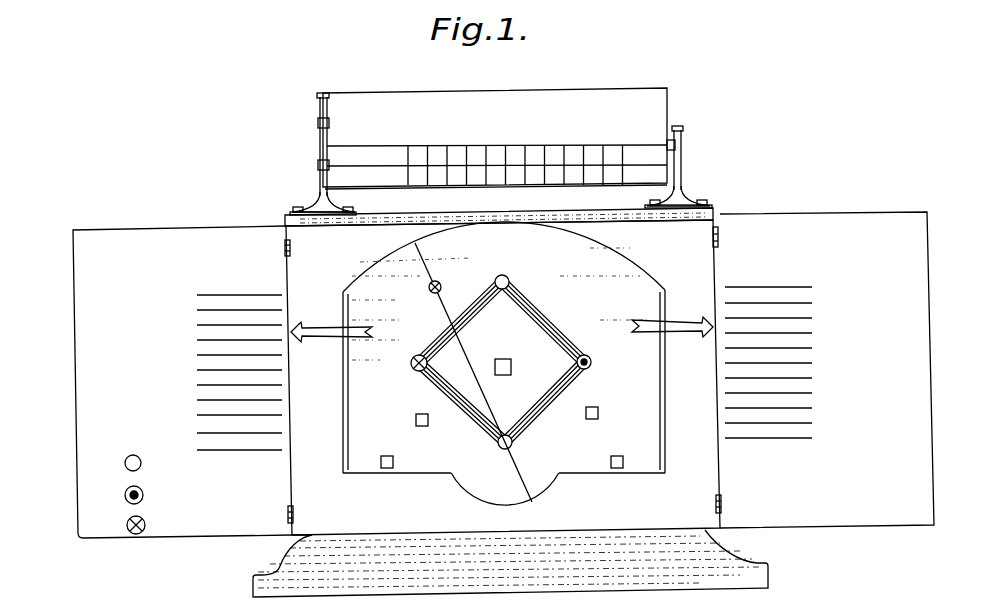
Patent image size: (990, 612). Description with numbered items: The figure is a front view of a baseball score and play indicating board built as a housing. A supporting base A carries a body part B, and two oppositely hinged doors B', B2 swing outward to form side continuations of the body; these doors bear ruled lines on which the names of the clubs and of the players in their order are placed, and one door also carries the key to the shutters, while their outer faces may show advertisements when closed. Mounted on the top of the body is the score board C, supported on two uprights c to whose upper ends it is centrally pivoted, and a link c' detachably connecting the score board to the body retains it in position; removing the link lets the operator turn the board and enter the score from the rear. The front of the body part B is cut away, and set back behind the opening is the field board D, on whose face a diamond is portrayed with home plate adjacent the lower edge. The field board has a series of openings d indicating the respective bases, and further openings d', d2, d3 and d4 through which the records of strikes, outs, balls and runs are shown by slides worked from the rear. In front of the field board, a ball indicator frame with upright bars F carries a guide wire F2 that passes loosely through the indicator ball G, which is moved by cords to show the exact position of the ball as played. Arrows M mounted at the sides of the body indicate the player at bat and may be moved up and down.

The supporting base A is at (510, 563).
The body part B is at (503, 371).
The hinged door B' is at (843, 370).
The hinged door B2 is at (73, 408).
The score board C is at (550, 97).
The upright c is at (495, 156).
The link c' is at (306, 111).
The field board D is at (635, 277).
The upright bar F is at (413, 246).
The guide wire F2 is at (537, 490).
The indicator ball G is at (428, 288).
The arrow M is at (320, 323).
The base opening d is at (504, 360).
The strike opening d' is at (409, 421).
The out opening d2 is at (394, 462).
The ball opening d3 is at (599, 413).
The run opening d4 is at (610, 462).